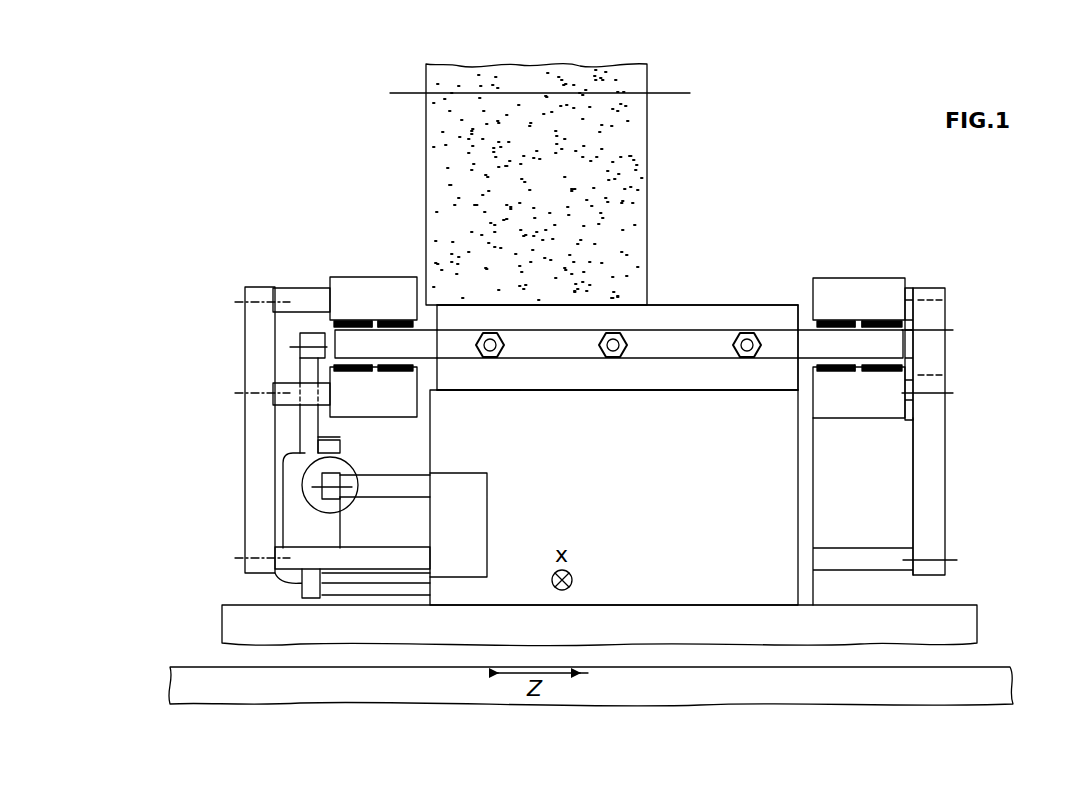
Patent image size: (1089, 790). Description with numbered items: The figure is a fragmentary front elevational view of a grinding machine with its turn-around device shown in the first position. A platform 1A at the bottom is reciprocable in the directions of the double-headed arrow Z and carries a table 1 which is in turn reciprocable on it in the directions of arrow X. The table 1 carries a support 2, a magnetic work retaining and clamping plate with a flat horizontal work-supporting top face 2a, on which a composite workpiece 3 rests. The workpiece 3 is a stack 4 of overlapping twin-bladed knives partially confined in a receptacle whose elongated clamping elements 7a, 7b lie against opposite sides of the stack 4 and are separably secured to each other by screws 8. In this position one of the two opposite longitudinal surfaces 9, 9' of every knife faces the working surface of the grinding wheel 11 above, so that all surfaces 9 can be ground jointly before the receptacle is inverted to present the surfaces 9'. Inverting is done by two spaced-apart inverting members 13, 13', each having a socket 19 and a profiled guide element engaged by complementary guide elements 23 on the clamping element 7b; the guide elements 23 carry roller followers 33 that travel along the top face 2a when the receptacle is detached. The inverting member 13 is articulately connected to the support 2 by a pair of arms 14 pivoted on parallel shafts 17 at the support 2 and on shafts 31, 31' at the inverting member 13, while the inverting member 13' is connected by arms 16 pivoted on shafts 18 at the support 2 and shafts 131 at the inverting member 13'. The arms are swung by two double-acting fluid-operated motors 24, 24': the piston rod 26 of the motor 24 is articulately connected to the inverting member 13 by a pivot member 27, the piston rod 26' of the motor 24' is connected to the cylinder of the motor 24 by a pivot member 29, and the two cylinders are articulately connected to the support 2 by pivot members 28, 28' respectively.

The table 1 is at (972, 622).
The platform 1A is at (1016, 688).
The support 2 is at (612, 523).
The work-supporting top face 2a is at (510, 392).
The workpiece 3 is at (735, 268).
The stack 4 is at (713, 385).
The clamping element 7a is at (672, 350).
The clamping element 7b is at (373, 362).
The screws 8 is at (598, 345).
The surface 9 is at (617, 273).
The surface 9' is at (617, 421).
The grinding wheel 11 is at (649, 137).
The inverting member 13 is at (348, 322).
The inverting member 13' is at (859, 320).
The arm 14 is at (258, 448).
The arm 16 is at (935, 467).
The shaft 17 is at (392, 585).
The shaft 18 is at (862, 568).
The socket 19 is at (381, 320).
The guide element 23 is at (372, 320).
The fluid-operated motor 24 is at (264, 500).
The fluid-operated motor 24' is at (261, 486).
The piston rod 26 is at (245, 393).
The piston rod 26' is at (362, 455).
The pivot member 27 is at (320, 335).
The pivot member 28 is at (309, 605).
The pivot member 28' is at (413, 525).
The pivot member 29 is at (318, 437).
The shaft 31 is at (253, 272).
The shaft 31' is at (253, 391).
The roller follower 33 is at (352, 320).
The shaft 131 is at (907, 288).